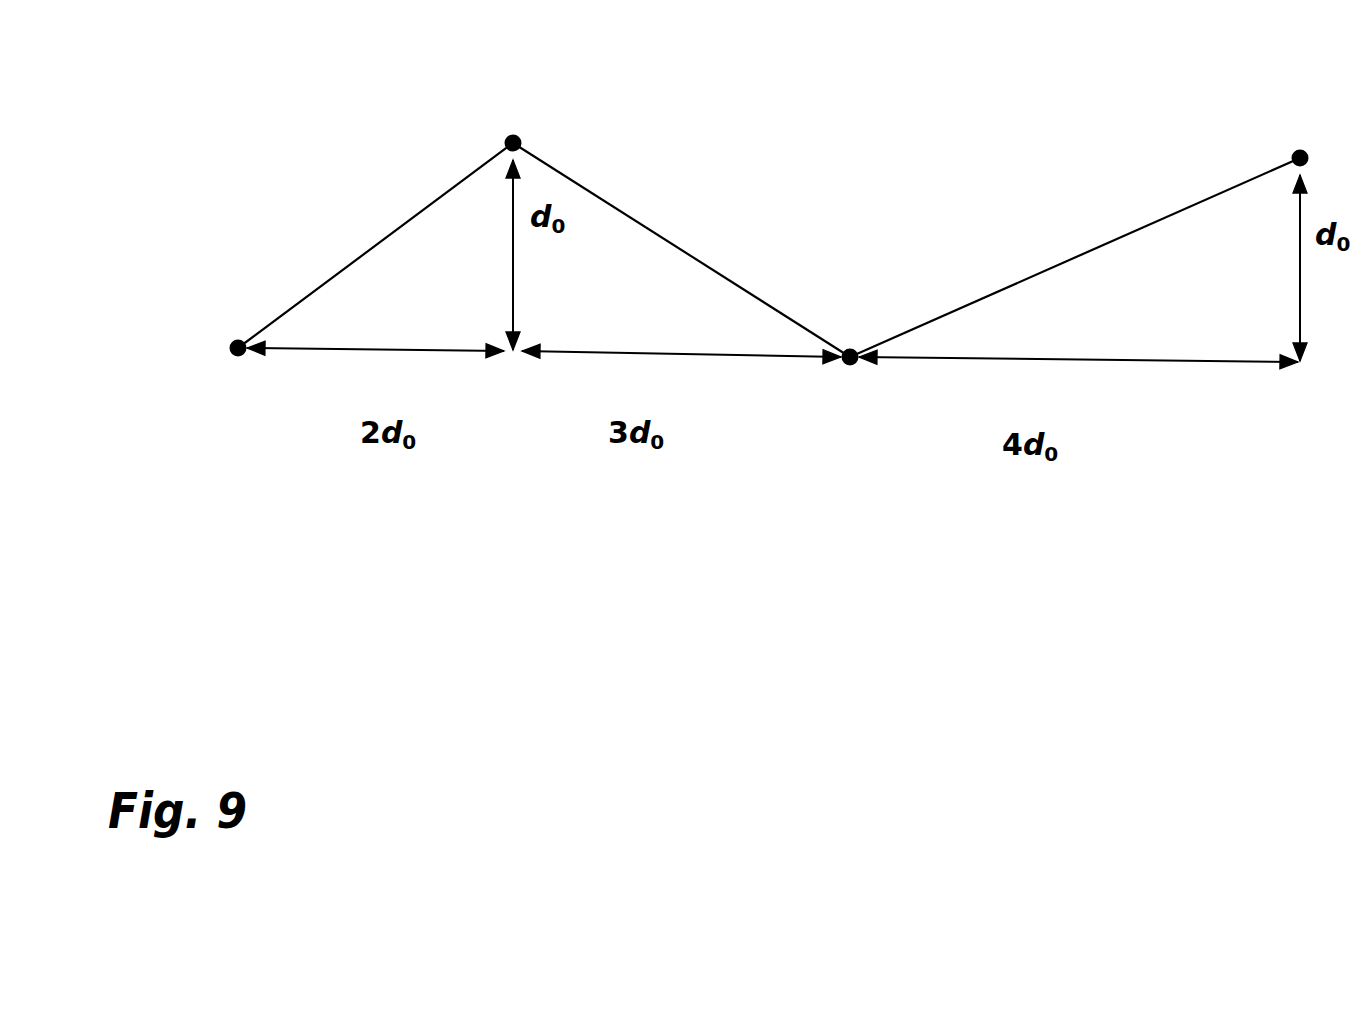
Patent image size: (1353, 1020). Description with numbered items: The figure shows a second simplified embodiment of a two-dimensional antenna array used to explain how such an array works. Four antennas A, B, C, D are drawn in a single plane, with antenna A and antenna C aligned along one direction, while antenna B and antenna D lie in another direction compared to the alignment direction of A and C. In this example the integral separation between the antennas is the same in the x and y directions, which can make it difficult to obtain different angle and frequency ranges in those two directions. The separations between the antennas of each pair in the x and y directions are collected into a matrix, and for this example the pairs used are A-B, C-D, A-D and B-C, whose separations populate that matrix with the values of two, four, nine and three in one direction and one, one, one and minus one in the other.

The antenna A is at (195, 322).
The antenna B is at (504, 82).
The antenna C is at (840, 298).
The antenna D is at (1293, 102).